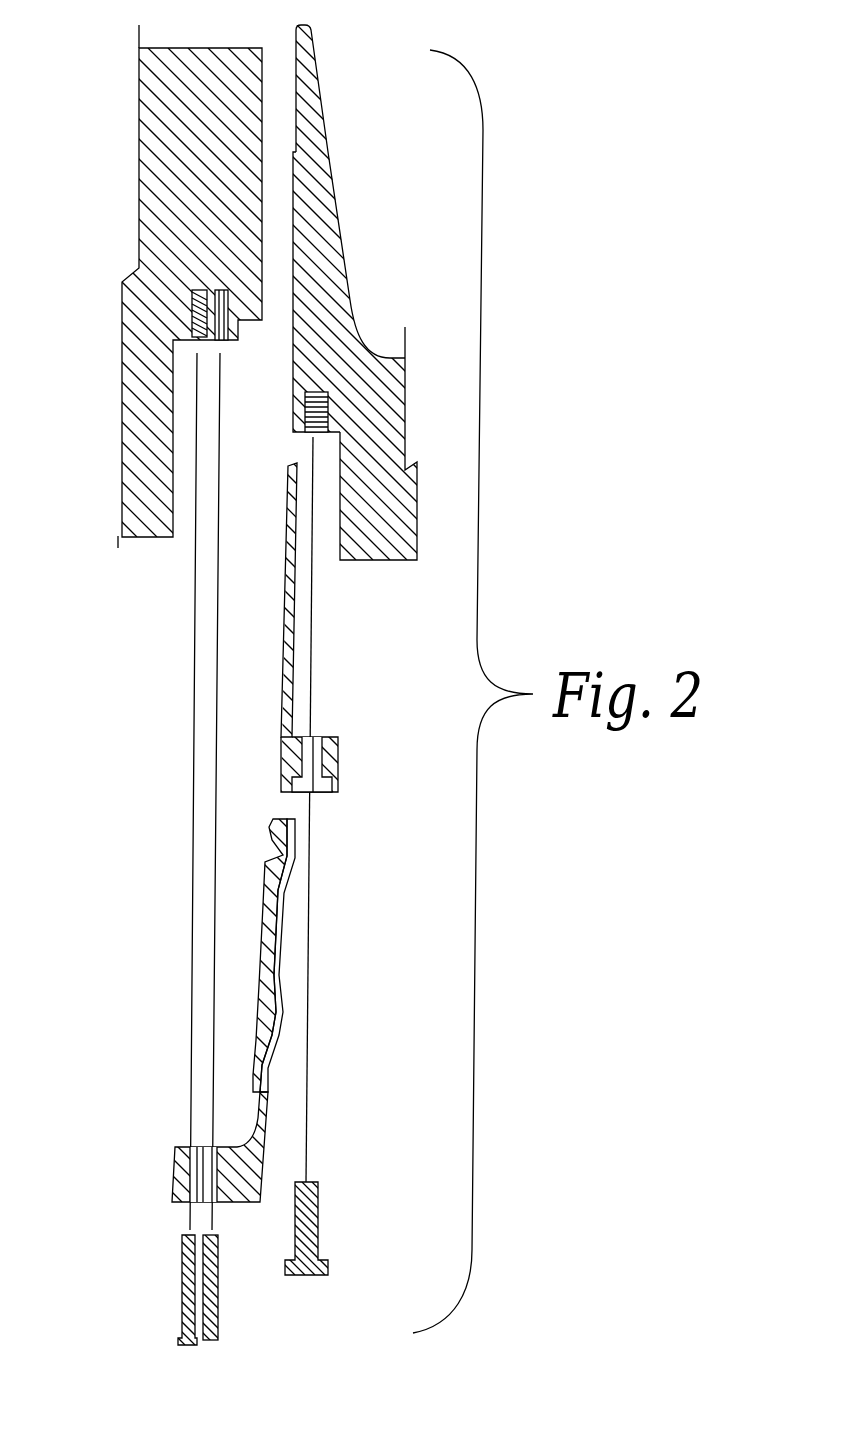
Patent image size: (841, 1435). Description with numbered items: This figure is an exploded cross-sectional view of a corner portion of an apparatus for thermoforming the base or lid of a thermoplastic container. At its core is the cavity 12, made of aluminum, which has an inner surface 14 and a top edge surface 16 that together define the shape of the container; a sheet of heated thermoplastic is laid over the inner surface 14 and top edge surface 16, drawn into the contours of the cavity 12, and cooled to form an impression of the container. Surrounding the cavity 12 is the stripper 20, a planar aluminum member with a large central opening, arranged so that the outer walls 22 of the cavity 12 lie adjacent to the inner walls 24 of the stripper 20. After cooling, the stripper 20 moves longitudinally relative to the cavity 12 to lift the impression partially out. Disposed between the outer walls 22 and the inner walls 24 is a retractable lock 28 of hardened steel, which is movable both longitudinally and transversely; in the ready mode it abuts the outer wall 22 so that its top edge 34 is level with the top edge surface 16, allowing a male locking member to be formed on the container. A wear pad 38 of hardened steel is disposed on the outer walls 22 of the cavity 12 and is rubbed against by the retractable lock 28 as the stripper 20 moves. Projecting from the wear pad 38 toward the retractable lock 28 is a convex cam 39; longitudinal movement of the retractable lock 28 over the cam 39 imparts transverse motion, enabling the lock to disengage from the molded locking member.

The cavity 12 is at (383, 388).
The inner surface 14 is at (337, 183).
The top edge surface 16 is at (303, 35).
The stripper 20 is at (173, 163).
The outer walls 22 is at (295, 392).
The inner walls 24 is at (262, 280).
The retractable lock 28 is at (283, 1042).
The top edge 34 is at (277, 825).
The wear pad 38 is at (328, 618).
The cam 39 is at (286, 497).